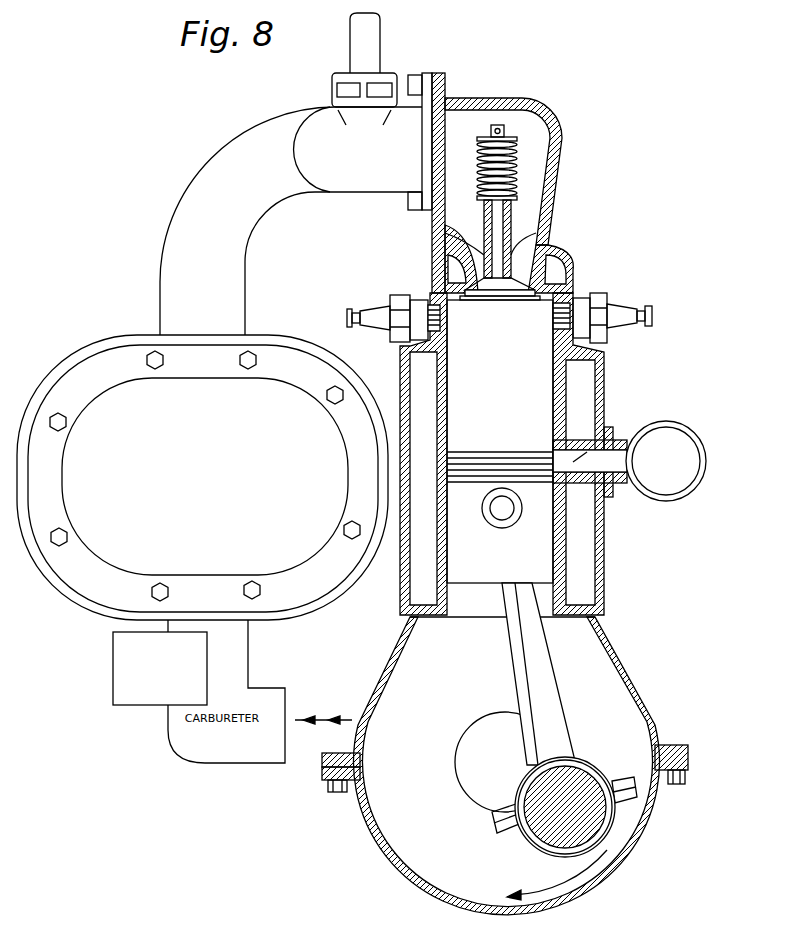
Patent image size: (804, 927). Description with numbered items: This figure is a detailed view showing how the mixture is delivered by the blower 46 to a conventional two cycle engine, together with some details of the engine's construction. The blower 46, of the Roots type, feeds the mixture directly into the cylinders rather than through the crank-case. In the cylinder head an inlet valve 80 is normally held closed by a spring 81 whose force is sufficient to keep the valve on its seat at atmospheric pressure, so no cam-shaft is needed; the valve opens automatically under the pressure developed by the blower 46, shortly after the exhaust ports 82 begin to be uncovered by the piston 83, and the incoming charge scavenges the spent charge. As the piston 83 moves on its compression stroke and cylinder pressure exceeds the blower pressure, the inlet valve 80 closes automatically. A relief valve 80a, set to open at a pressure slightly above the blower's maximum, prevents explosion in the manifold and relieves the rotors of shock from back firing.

The blower 46 is at (118, 347).
The inlet valve 80 is at (540, 270).
The relief valve 80a is at (370, 46).
The spring 81 is at (517, 160).
The exhaust port 82 is at (612, 428).
The piston 83 is at (504, 523).